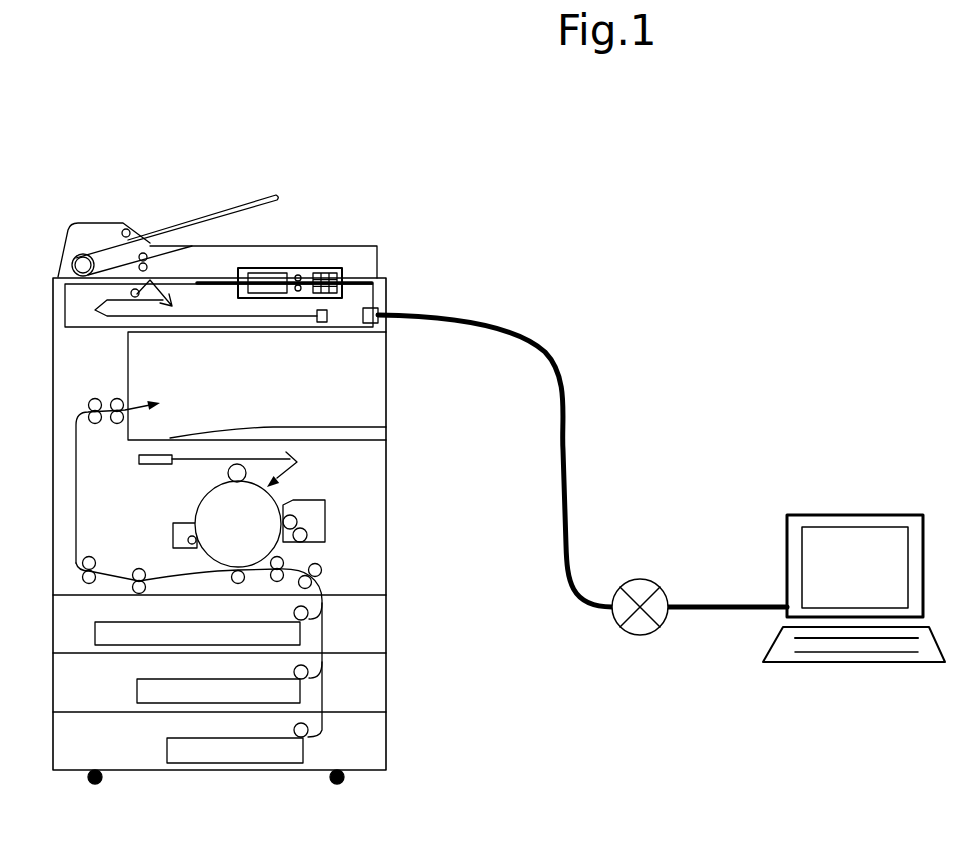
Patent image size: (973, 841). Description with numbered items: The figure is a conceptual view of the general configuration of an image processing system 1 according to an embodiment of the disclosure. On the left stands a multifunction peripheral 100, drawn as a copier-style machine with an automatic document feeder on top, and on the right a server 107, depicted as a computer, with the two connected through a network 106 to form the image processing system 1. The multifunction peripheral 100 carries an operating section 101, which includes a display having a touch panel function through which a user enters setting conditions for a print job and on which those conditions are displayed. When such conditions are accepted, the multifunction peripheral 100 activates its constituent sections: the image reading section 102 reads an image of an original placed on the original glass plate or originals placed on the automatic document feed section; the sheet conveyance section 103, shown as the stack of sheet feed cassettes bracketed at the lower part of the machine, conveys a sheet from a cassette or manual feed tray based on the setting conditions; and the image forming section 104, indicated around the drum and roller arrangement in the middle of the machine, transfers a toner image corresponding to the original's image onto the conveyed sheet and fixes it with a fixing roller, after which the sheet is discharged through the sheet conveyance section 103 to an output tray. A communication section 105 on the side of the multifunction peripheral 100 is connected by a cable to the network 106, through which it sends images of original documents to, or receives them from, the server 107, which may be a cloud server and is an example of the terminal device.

The image processing system 1 is at (566, 185).
The multifunction peripheral 100 is at (168, 213).
The operating section 101 is at (308, 268).
The image reading section 102 is at (270, 266).
The sheet conveyance section 103 is at (400, 562).
The image forming section 104 is at (360, 485).
The communication section 105 is at (380, 312).
The network 106 is at (632, 636).
The server 107 is at (857, 657).